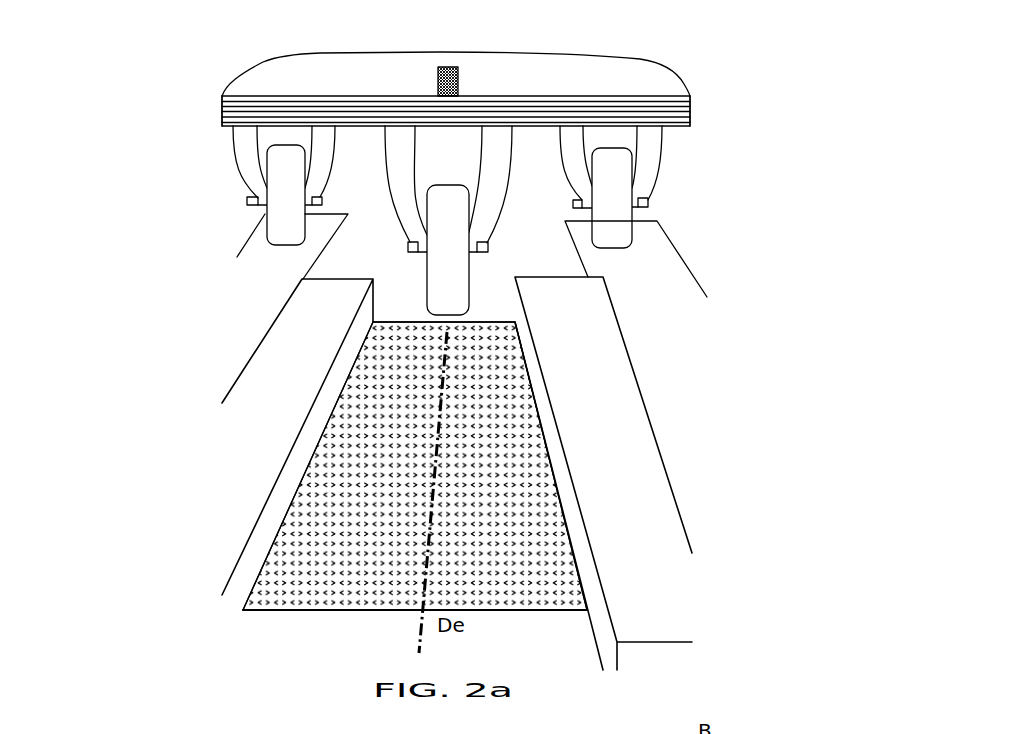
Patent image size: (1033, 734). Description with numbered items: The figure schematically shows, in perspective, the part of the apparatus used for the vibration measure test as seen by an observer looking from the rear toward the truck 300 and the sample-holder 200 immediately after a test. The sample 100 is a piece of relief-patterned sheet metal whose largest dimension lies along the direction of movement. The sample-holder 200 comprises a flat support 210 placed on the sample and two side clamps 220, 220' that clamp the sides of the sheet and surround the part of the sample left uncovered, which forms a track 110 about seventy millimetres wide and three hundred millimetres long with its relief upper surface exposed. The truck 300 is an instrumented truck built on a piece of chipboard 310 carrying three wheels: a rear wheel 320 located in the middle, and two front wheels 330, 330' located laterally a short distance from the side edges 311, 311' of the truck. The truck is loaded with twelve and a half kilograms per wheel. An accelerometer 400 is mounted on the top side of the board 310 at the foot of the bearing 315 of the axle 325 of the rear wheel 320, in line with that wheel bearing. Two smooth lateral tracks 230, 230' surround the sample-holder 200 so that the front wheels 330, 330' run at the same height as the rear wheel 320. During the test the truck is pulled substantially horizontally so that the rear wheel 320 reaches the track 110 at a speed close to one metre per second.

The sample 100 is at (380, 428).
The track 110 is at (483, 423).
The sample-holder 200 is at (188, 484).
The flat support 210 is at (332, 650).
The side clamp 220 is at (251, 437).
The side clamp 220' is at (654, 473).
The smooth lateral track 230 is at (230, 252).
The smooth lateral track 230' is at (677, 261).
The truck 300 is at (190, 76).
The chipboard 310 is at (558, 107).
The side edge 311 is at (137, 104).
The side edge 311' is at (741, 105).
The bearing 315 is at (400, 167).
The rear wheel 320 is at (448, 287).
The axle 325 is at (410, 240).
The front wheel 330 is at (196, 189).
The front wheel 330' is at (674, 198).
The accelerometer 400 is at (452, 72).